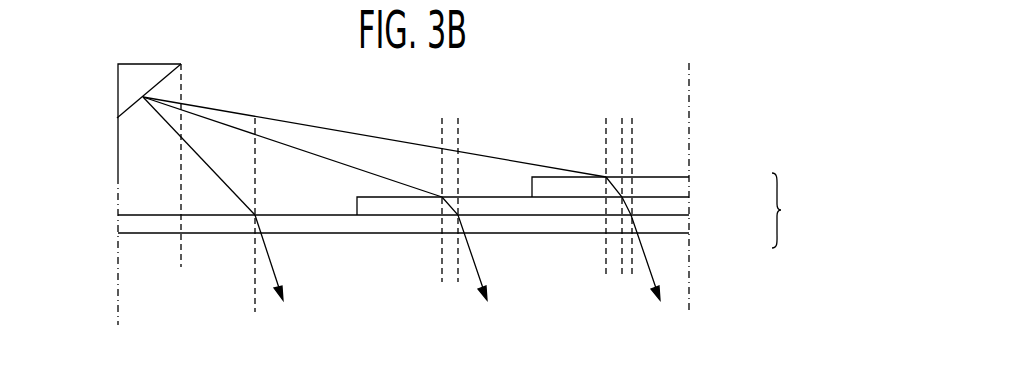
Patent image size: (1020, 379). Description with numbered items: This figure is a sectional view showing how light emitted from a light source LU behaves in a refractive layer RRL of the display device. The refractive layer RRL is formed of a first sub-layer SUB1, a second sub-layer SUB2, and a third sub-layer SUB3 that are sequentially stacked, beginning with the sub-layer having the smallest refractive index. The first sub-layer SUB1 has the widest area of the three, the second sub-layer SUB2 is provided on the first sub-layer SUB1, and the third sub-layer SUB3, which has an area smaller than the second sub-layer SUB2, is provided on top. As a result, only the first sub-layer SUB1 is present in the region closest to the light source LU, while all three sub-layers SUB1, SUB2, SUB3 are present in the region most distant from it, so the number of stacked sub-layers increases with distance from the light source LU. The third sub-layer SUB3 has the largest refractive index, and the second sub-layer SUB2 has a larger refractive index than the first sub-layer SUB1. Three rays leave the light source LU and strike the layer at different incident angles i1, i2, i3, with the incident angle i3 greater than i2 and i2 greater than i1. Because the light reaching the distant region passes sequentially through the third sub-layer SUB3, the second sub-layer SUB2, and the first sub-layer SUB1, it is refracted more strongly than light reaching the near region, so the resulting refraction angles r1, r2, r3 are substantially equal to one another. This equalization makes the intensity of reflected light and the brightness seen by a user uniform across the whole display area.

The light source LU is at (122, 78).
The incident angle of light in region closest to the light source i1 is at (253, 193).
The incident angle of light in intermediate region i2 is at (442, 172).
The incident angle of light in region most distant from the light source i3 is at (606, 162).
The refraction angle of light in region closest to the light source r1 is at (263, 247).
The refraction angle of light in intermediate region r2 is at (450, 207).
The refraction angle of light in region most distant from the light source r3 is at (607, 198).
The first sub-layer SUB1 is at (684, 227).
The second sub-layer SUB2 is at (684, 207).
The third sub-layer SUB3 is at (684, 187).
The refractive layer RRL is at (796, 210).